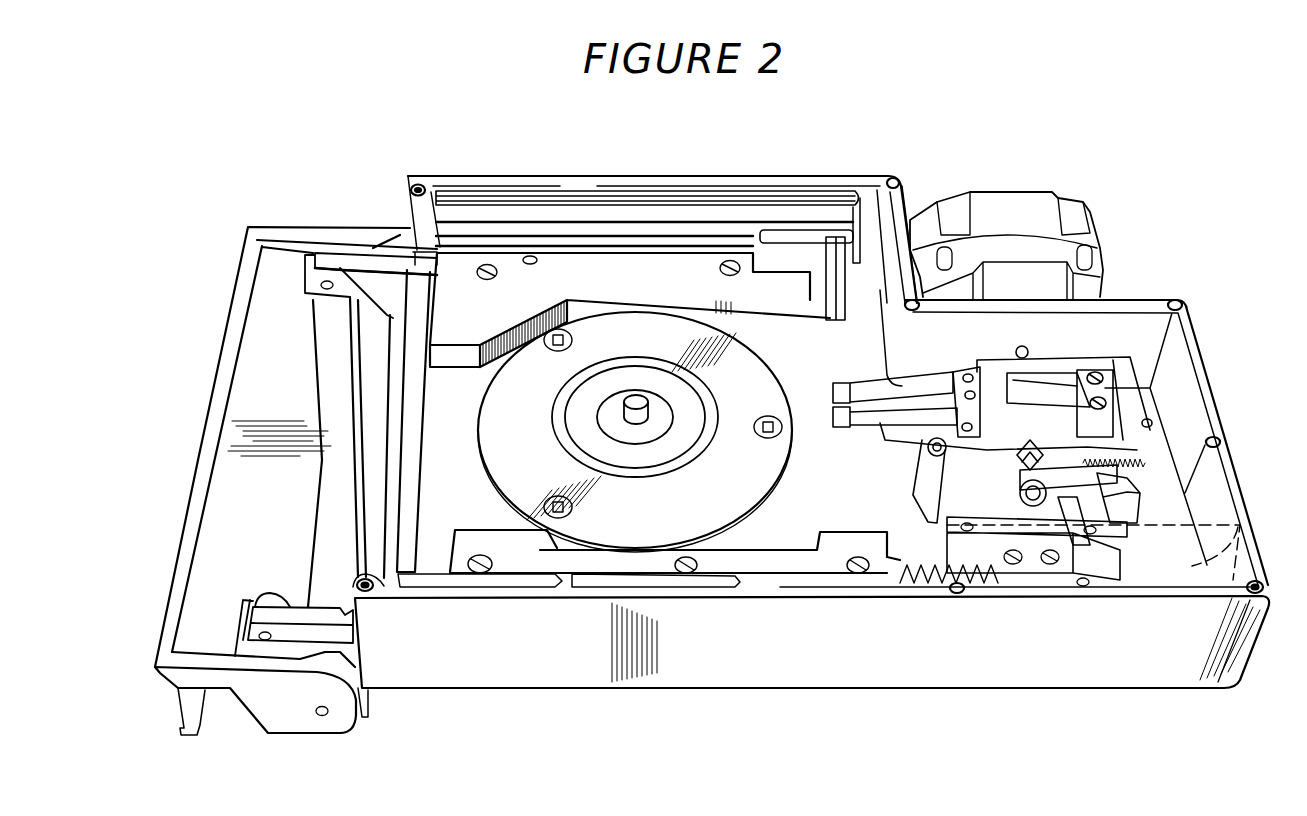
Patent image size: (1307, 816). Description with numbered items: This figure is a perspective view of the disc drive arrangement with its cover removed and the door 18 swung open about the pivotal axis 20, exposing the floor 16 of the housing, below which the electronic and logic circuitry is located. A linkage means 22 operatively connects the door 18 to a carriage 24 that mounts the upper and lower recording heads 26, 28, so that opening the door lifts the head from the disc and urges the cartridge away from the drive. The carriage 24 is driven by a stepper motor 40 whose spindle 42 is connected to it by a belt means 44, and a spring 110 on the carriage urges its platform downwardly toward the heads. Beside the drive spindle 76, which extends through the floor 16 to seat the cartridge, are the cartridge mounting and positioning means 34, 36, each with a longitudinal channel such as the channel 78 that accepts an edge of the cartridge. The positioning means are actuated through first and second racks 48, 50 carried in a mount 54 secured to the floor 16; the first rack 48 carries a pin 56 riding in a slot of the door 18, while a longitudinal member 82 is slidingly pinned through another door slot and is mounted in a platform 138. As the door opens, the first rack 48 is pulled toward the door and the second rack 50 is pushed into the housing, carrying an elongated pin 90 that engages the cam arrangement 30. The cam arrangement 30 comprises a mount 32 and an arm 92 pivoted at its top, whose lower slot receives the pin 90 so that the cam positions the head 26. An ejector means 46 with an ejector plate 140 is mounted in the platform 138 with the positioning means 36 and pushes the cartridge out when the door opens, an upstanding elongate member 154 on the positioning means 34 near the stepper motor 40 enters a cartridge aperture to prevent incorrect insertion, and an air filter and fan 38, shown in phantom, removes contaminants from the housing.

The floor 16 is at (803, 355).
The door 18 is at (232, 350).
The pivotal axis 20 is at (322, 716).
The linkage means 22 is at (774, 537).
The carriage 24 is at (904, 452).
The upper recording head 26 is at (841, 386).
The lower recording head 28 is at (838, 414).
The cam arrangement 30 is at (1010, 460).
The mount 32 is at (1140, 505).
The cartridge mounting and positioning means 34 is at (497, 550).
The cartridge mounting and positioning means 36 is at (541, 163).
The air filter and fan 38 is at (1237, 540).
The stepper motor 40 is at (1092, 222).
The spindle 42 is at (1026, 350).
The belt means 44 is at (1103, 355).
The ejector means 46 is at (922, 192).
The first rack 48 is at (335, 605).
The second rack 50 is at (912, 556).
The mount 54 is at (759, 573).
The pin 56 is at (260, 637).
The drive spindle 76 is at (645, 413).
The longitudinal channel 78 is at (690, 215).
The longitudinal member 82 is at (365, 258).
The elongated pin 90 is at (1063, 505).
The arm 92 is at (1045, 500).
The spring 110 is at (1060, 388).
The platform 138 is at (654, 283).
The ejector plate 140 is at (838, 294).
The elongate member 154 is at (812, 232).